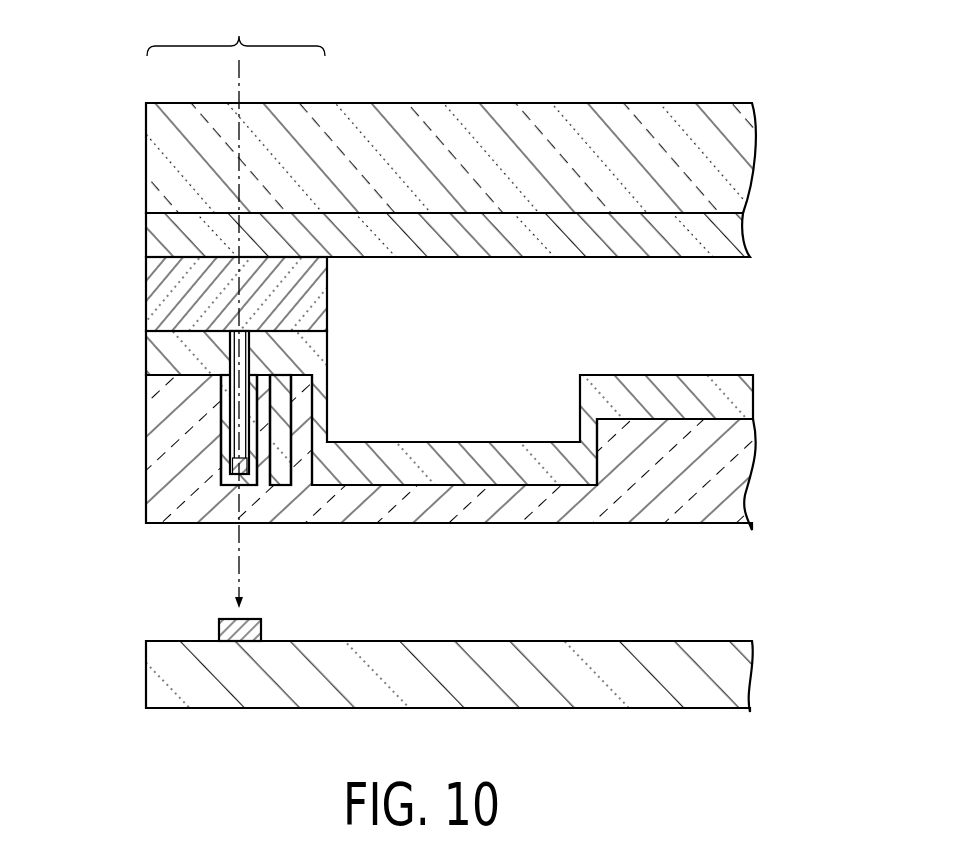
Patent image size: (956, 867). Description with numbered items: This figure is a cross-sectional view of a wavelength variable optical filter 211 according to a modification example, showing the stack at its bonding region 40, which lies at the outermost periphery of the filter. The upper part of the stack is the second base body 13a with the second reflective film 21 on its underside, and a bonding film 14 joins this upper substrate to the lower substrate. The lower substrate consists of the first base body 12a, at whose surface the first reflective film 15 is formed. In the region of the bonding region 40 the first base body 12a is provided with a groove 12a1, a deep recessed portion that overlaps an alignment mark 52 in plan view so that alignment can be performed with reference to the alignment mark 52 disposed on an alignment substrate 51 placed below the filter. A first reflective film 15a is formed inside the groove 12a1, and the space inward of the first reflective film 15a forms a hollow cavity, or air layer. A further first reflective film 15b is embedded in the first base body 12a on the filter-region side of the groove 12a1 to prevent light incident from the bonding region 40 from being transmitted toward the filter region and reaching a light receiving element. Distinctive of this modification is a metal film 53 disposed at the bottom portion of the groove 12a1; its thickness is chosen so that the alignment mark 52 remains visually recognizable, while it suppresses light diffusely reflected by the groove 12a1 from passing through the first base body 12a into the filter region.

The wavelength variable optical filter 211 is at (793, 23).
The bonding region 40 is at (236, 306).
The second base body 13a is at (158, 152).
The second reflective film 21 is at (156, 239).
The bonding film 14 is at (158, 290).
The first reflective film 15 is at (158, 348).
The first reflective film 15a is at (221, 400).
The first reflective film 15b is at (292, 404).
The groove 12a1 is at (236, 438).
The first base body 12a is at (158, 487).
The metal film 53 is at (236, 474).
The alignment mark 52 is at (219, 633).
The alignment substrate 51 is at (162, 677).